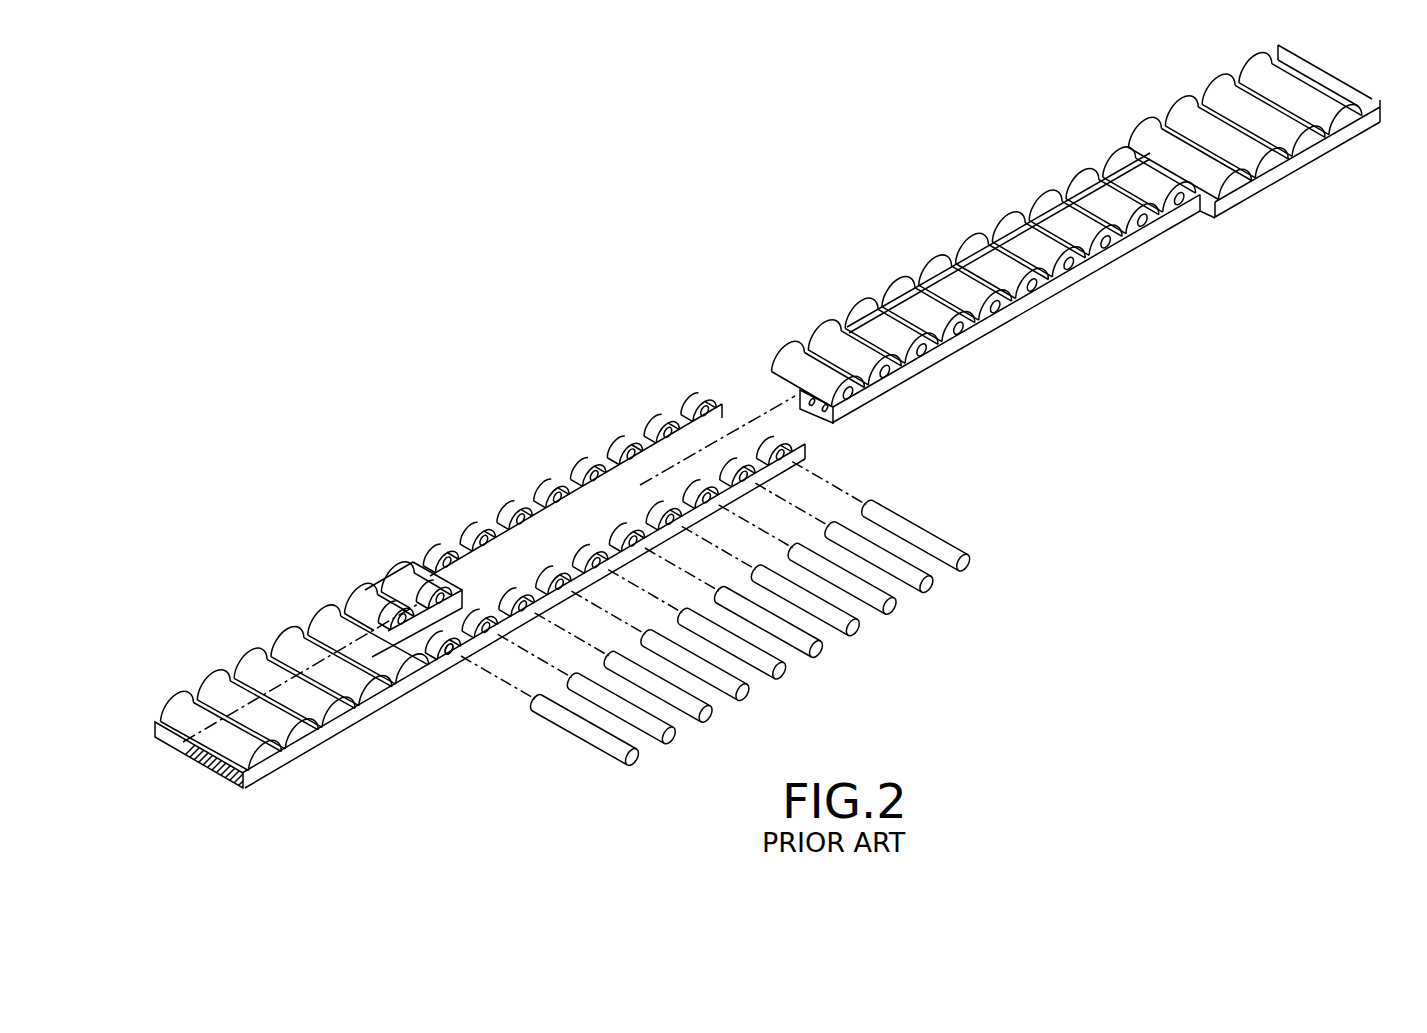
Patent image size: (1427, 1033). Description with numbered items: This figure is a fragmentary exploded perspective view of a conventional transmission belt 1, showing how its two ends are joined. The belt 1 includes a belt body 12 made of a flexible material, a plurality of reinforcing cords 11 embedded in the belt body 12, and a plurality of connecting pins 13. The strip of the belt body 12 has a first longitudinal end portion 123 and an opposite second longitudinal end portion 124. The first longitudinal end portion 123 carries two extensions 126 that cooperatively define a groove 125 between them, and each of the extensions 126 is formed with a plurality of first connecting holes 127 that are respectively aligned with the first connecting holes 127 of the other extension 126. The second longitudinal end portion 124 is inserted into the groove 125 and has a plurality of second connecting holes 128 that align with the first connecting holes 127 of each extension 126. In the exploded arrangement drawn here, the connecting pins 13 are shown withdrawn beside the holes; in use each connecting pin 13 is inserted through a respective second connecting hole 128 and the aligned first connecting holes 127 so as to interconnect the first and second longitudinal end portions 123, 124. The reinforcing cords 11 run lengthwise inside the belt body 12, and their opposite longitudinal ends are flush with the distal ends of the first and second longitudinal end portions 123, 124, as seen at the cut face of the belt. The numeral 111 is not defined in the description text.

The transmission belt 1 is at (326, 463).
The reinforcing cords 11 is at (216, 748).
The belt body 12 is at (956, 207).
The connecting pins 13 is at (945, 555).
The holes 111 is at (457, 668).
The first longitudinal end portion 123 is at (569, 455).
The second longitudinal end portion 124 is at (1010, 327).
The groove 125 is at (543, 545).
The extensions 126 is at (705, 398).
The first connecting holes 127 is at (663, 430).
The second connecting holes 128 is at (924, 356).